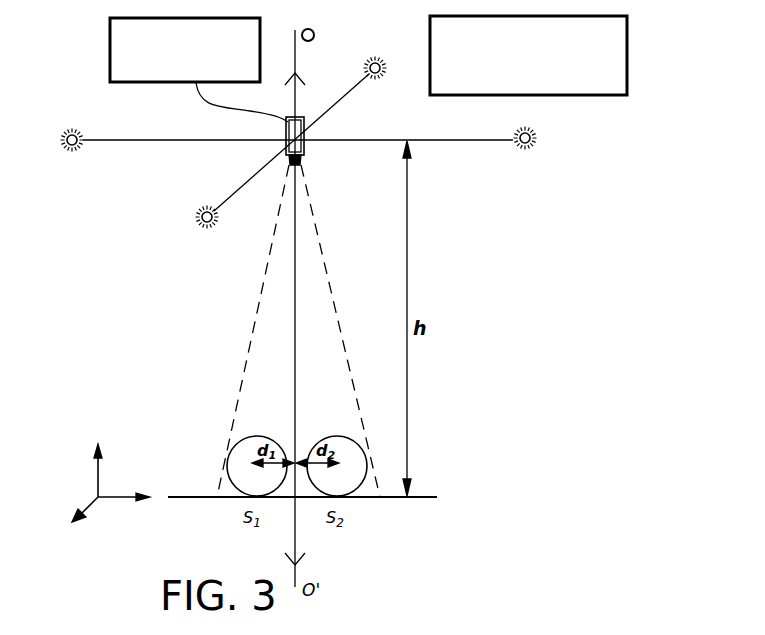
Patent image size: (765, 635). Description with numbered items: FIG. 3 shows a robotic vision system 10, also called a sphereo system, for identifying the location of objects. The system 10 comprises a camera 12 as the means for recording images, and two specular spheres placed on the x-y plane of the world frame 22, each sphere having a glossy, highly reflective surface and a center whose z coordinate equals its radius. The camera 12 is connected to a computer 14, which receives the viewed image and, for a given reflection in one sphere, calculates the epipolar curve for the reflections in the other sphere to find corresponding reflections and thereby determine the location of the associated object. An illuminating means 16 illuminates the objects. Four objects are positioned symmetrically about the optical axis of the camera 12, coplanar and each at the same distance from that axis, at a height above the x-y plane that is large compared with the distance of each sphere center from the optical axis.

The robotic vision system 10 is at (80, 88).
The camera 12 is at (303, 150).
The computer 14 is at (110, 52).
The illuminating means 16 is at (568, 96).
The world frame 22 is at (106, 506).